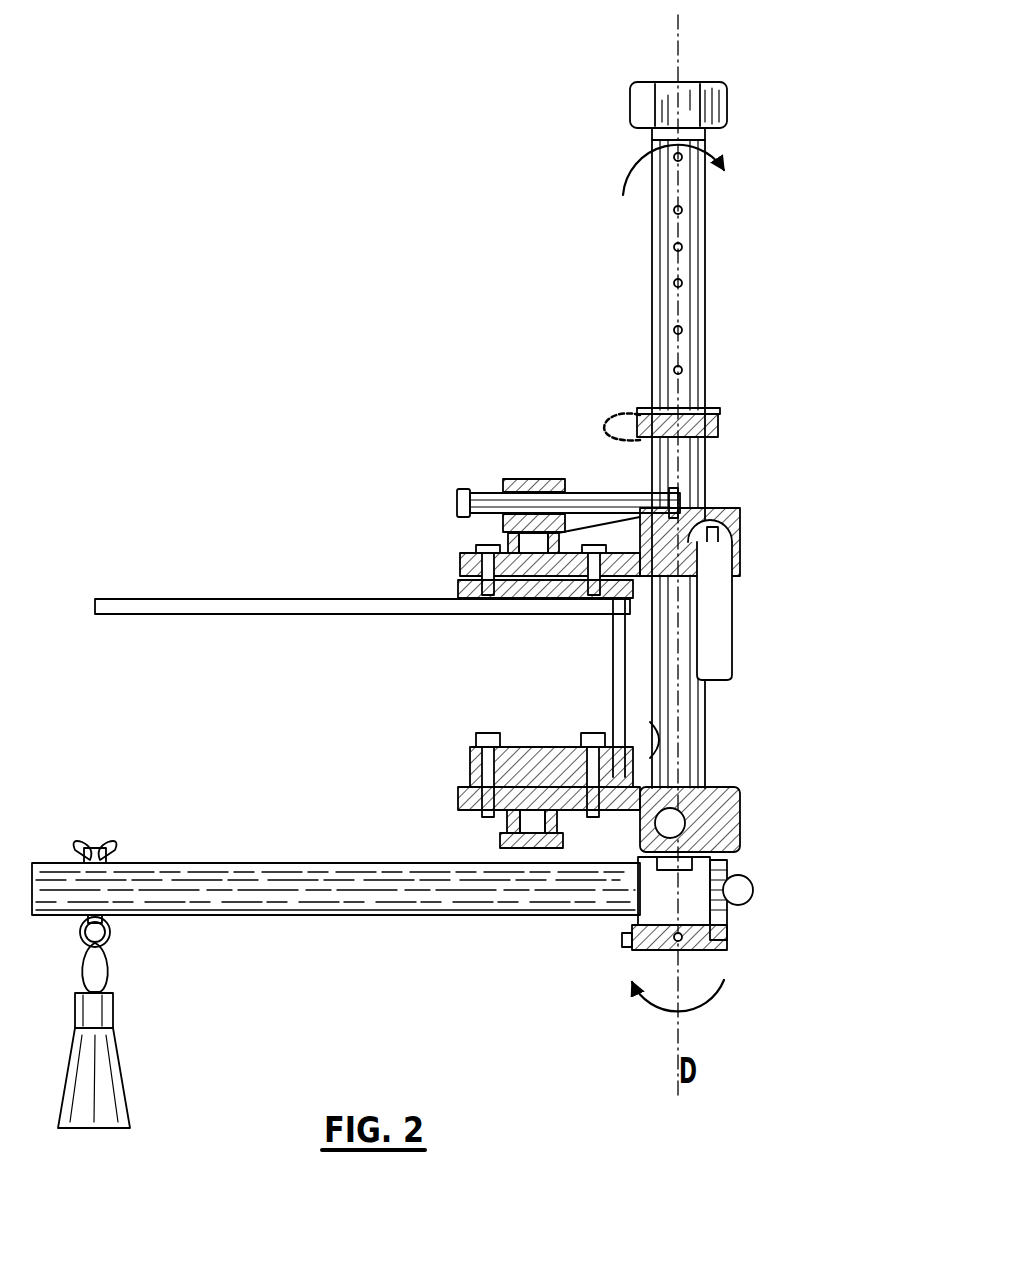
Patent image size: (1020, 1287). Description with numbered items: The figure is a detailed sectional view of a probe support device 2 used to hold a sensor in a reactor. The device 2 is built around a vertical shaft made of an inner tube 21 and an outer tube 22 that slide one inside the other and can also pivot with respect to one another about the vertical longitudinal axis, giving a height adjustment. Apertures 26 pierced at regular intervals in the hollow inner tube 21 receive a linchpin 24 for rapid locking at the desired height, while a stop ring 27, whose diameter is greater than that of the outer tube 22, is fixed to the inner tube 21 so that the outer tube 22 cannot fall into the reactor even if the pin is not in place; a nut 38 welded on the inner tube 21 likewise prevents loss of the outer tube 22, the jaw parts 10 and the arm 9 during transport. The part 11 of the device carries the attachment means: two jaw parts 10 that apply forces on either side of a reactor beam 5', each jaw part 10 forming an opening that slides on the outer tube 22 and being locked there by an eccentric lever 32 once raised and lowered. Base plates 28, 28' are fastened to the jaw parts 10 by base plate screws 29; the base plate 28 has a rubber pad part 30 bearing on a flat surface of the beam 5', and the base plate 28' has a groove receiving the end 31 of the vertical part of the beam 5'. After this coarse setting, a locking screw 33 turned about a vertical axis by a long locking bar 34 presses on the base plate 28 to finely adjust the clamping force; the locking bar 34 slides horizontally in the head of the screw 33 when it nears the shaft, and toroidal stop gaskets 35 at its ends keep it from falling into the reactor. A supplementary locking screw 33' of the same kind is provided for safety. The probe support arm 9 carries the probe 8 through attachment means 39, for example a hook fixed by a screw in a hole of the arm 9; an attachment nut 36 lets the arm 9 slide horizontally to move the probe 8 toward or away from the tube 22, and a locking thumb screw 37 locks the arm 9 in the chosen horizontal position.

The probe support device 2 is at (742, 250).
The reactor beam 5' is at (362, 561).
The probe 8 is at (102, 1010).
The probe support arm 9 is at (320, 880).
The jaw part 10 is at (456, 795).
The attachment part 11 is at (758, 575).
The inner tube 21 is at (653, 305).
The outer tube 22 is at (700, 780).
The linchpin 24 is at (644, 410).
The apertures 26 is at (683, 332).
The stop ring 27 is at (612, 945).
The base plate 28 is at (455, 630).
The base plate 28' is at (551, 747).
The base plate screws 29 is at (470, 585).
The rubber pad part 30 is at (522, 603).
The end of vertical part of the beam 31 is at (658, 740).
The eccentric lever 32 is at (720, 623).
The locking screw 33 is at (525, 455).
The supplementary locking screw 33' is at (470, 828).
The locking bar 34 is at (458, 503).
The toroidal stop gaskets 35 is at (465, 478).
The attachment nut 36 is at (692, 908).
The locking thumb screw 37 is at (682, 822).
The nut 38 is at (640, 105).
The attachment means 39 is at (90, 838).